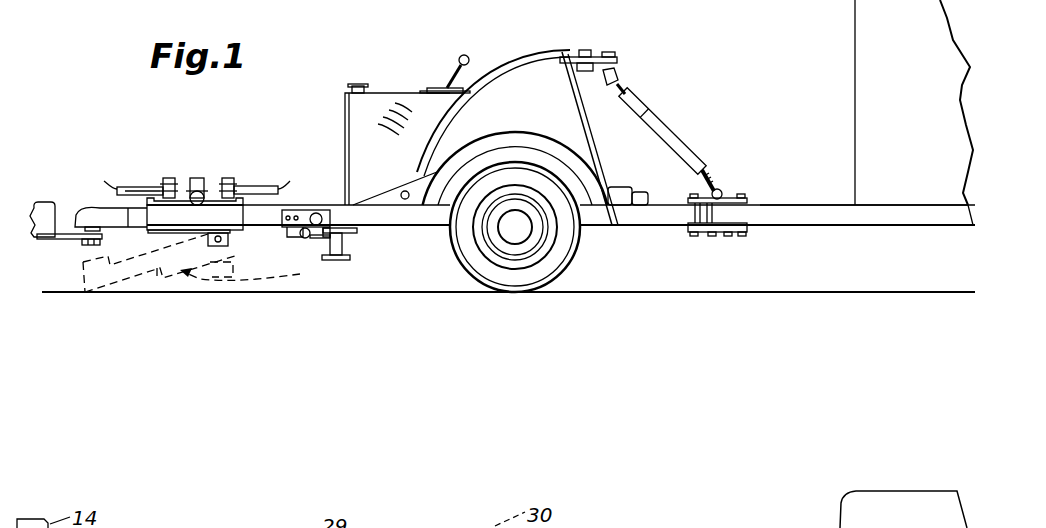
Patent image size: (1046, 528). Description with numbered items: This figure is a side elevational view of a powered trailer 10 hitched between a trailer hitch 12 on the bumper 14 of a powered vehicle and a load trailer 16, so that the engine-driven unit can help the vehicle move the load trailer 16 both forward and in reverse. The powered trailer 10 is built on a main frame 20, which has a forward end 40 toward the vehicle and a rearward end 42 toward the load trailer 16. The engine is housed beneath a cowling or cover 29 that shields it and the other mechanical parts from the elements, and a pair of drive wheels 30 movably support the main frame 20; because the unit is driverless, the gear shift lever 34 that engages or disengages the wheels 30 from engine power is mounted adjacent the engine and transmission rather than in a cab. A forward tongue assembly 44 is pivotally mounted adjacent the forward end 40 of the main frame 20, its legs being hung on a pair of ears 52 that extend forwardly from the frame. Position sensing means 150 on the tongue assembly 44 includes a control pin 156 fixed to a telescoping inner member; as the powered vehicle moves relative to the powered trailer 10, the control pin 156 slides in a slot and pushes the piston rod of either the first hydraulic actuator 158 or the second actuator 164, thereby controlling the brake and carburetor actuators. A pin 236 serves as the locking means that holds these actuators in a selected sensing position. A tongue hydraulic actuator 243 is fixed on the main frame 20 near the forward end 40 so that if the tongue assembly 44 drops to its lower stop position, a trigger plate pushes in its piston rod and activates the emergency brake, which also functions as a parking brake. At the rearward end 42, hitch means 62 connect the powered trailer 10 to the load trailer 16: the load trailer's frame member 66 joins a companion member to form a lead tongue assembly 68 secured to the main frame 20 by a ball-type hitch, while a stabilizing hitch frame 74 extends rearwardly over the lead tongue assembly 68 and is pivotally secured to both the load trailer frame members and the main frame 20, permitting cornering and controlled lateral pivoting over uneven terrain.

The powered trailer 10 is at (422, 65).
The trailer hitch 12 is at (76, 222).
The bumper 14 is at (45, 201).
The load trailer 16 is at (918, 113).
The main frame 20 is at (397, 221).
The cowling or cover 29 is at (343, 108).
The wheels 30 is at (481, 269).
The gear shift lever 34 is at (443, 86).
The forward end 40 is at (326, 206).
The rearward end 42 is at (613, 226).
The forward tongue assembly 44 is at (263, 221).
The ears 52 is at (331, 204).
The hitch means 62 is at (704, 153).
The frame member 66 is at (796, 212).
The lead tongue assembly 68 is at (665, 221).
The stabilizing hitch frame 74 is at (610, 46).
The position sensing means 150 is at (196, 183).
The control pin 156 is at (205, 197).
The first hydraulic actuator 158 is at (145, 186).
The second actuator 164 is at (237, 189).
The pin 236 is at (193, 197).
The tongue hydraulic actuator 243 is at (350, 240).